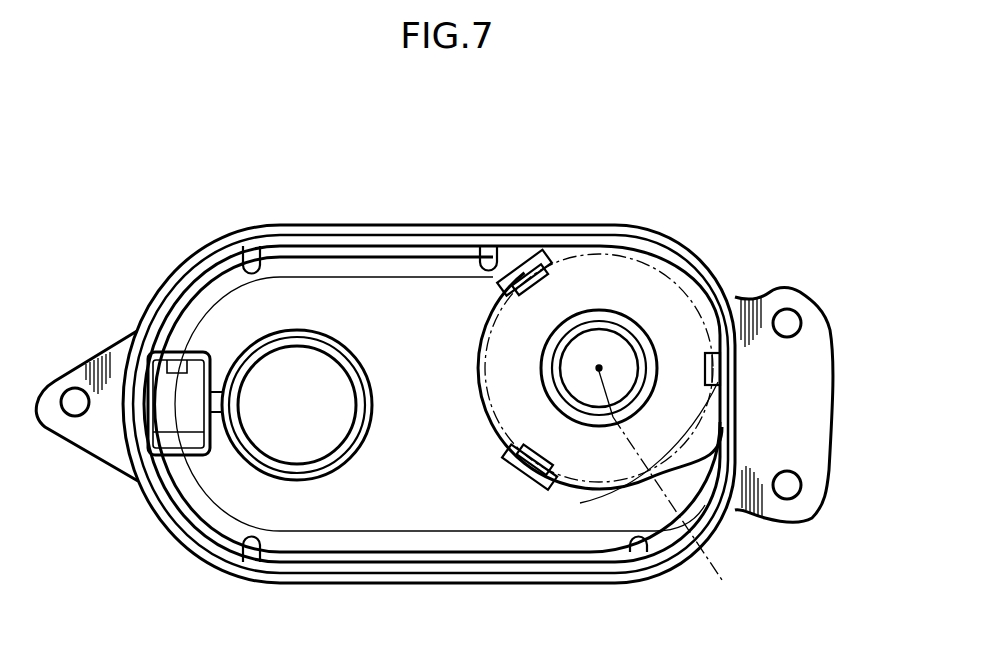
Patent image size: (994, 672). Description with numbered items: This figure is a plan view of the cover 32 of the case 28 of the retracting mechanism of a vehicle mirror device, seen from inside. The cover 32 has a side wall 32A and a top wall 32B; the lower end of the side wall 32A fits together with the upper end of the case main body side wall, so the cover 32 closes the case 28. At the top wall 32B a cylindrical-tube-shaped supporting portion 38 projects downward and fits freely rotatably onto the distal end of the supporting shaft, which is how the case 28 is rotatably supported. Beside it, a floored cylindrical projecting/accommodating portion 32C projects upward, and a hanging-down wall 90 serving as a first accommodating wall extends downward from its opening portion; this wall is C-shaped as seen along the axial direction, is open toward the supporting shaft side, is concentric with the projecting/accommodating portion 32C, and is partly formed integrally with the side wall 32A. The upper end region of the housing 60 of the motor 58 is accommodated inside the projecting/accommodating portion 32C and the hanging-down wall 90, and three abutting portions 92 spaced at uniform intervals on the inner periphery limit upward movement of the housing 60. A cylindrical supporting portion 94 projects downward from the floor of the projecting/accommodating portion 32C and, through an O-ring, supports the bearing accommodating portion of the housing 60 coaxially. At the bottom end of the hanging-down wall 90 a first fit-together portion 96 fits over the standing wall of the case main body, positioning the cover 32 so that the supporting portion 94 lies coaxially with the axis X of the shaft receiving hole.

The cover 32 is at (180, 544).
The case 28 is at (407, 404).
The side wall 32A is at (304, 580).
The top wall 32B is at (410, 502).
The projecting/accommodating portion 32C is at (494, 360).
The supporting portion 38 is at (313, 331).
The motor 58 is at (706, 295).
The housing 60 is at (480, 400).
The hanging-down wall 90 is at (583, 500).
The first fit-together portion 96 is at (649, 510).
The abutting portions 92 is at (529, 256).
The supporting portion 94 is at (618, 312).
The axis X is at (667, 491).